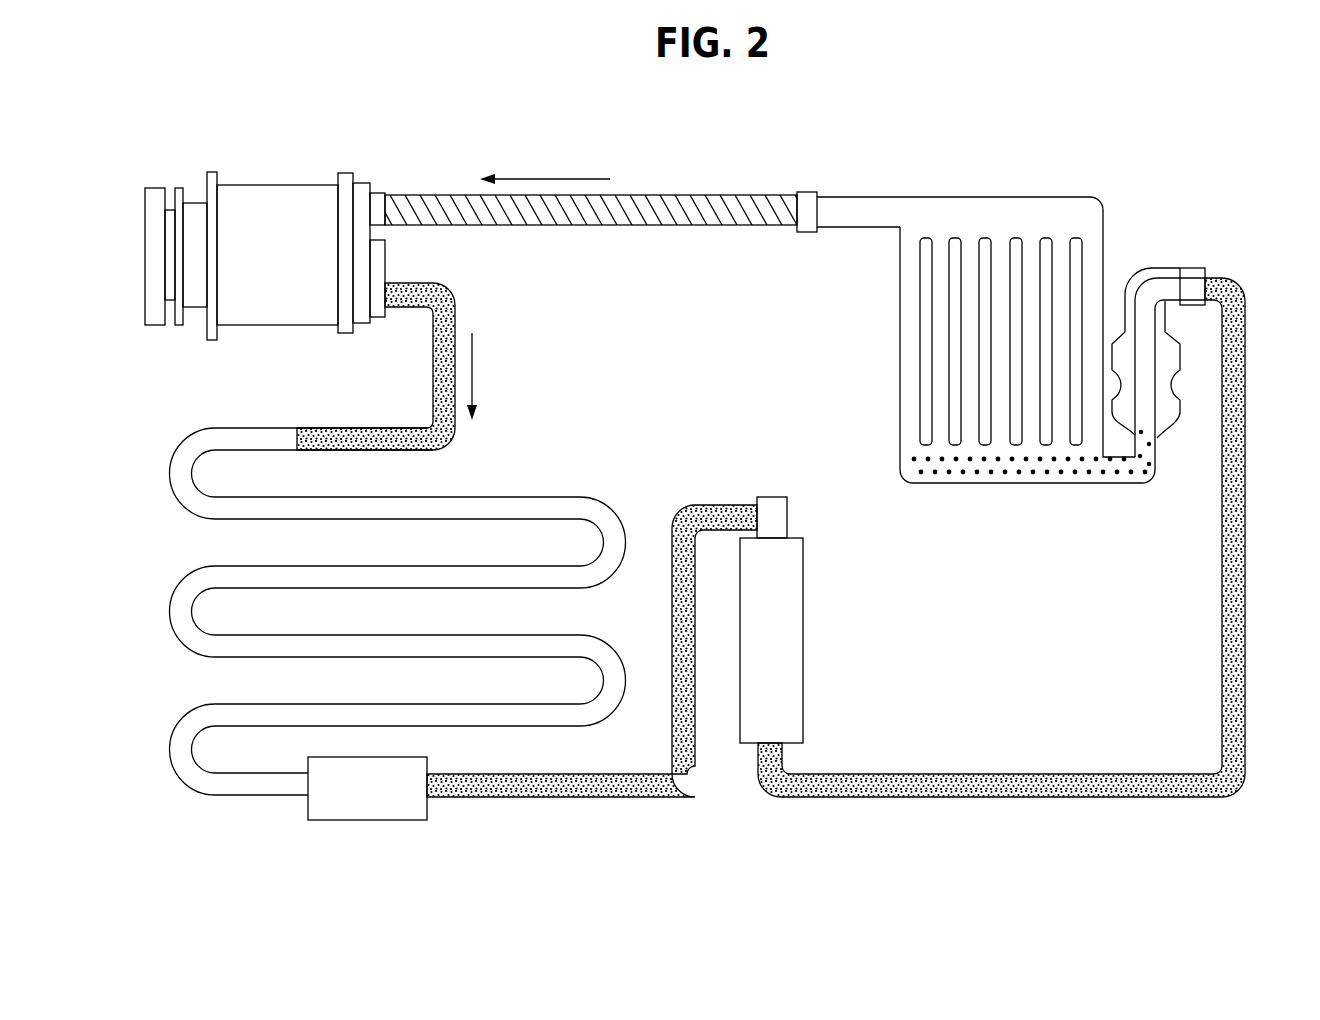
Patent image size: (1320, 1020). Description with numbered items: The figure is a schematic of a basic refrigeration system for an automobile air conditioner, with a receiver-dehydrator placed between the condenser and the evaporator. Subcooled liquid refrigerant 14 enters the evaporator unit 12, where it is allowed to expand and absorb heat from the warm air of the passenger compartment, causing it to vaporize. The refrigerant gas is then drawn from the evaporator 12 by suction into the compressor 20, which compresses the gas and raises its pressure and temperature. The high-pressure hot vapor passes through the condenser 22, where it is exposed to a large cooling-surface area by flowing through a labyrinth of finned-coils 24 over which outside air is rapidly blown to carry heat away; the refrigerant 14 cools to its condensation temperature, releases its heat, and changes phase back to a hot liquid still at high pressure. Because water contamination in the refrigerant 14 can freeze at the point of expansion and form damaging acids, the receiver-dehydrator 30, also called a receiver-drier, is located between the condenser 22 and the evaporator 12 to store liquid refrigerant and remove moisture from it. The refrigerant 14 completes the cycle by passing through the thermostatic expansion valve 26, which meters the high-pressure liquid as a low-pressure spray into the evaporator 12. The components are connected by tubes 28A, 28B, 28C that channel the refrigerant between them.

The evaporator unit 12 is at (903, 390).
The refrigerant 14 is at (527, 213).
The compressor 20 is at (264, 187).
The condenser 22 is at (387, 820).
The finned-coils 24 is at (562, 500).
The thermostatic expansion valve 26 is at (1158, 270).
The tube 28A is at (656, 195).
The tube 28B is at (1121, 810).
The tube 28C is at (433, 397).
The receiver-dehydrator 30 is at (800, 607).